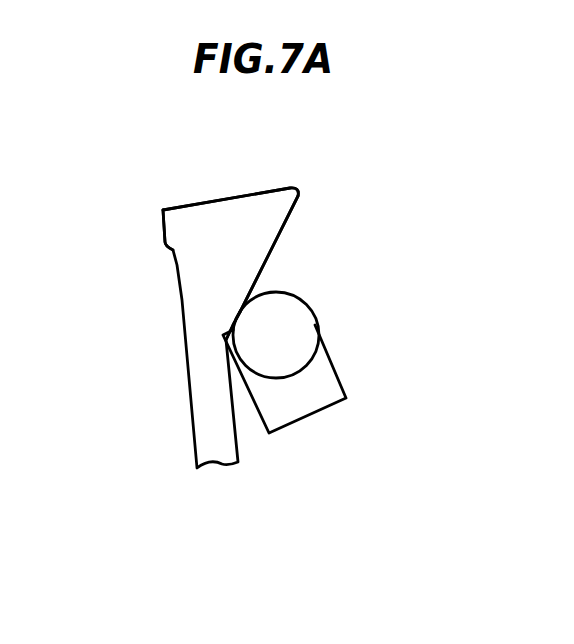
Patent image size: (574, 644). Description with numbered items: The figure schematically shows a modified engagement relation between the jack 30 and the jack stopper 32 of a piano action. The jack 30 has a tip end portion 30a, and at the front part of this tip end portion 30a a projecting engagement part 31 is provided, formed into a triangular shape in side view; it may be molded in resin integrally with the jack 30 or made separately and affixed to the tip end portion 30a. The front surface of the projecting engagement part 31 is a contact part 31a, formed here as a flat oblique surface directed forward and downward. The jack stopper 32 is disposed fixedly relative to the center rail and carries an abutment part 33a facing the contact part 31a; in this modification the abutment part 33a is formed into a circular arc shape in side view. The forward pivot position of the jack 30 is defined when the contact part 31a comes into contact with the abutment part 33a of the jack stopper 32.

The jack 30 is at (179, 428).
The tip end portion of the jack 30a is at (173, 220).
The projecting engagement part 31 is at (263, 203).
The contact part 31a is at (280, 264).
The jack stopper 32 is at (333, 349).
The abutment part 33a is at (233, 317).